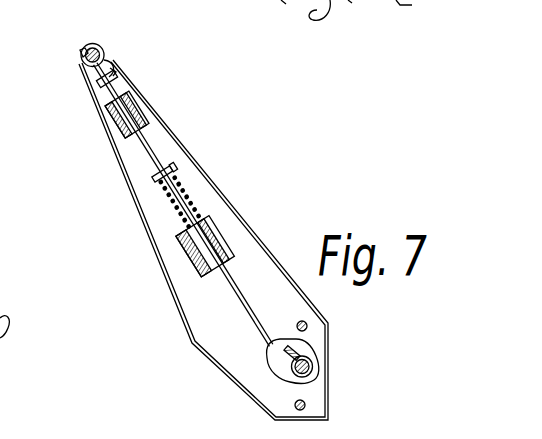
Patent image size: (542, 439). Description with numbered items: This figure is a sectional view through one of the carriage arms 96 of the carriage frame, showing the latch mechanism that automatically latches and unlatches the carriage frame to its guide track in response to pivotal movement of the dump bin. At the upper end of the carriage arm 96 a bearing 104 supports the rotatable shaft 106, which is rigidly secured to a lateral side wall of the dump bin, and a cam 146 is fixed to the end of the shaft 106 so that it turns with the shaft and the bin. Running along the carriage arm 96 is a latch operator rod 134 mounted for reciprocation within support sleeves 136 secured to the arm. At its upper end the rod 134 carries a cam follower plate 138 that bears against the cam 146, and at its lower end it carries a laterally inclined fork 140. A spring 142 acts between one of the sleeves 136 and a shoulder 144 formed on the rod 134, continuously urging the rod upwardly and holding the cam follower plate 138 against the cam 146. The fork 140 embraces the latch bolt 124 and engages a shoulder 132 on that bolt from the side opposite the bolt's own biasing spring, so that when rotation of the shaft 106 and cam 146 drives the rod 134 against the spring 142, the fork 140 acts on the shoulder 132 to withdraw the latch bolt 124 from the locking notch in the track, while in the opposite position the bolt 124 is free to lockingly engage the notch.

The carriage arm 96 is at (155, 253).
The bearing 104 is at (96, 43).
The rotatable shaft 106 is at (80, 54).
The latch bolt 124 is at (316, 374).
The shoulder 132 is at (315, 365).
The latch operator rod 134 is at (243, 307).
The support sleeve 136 is at (113, 117).
The cam follower plate 138 is at (114, 74).
The laterally inclined fork 140 is at (291, 372).
The spring 142 is at (187, 195).
The shoulder 144 is at (168, 170).
The cam 146 is at (112, 64).